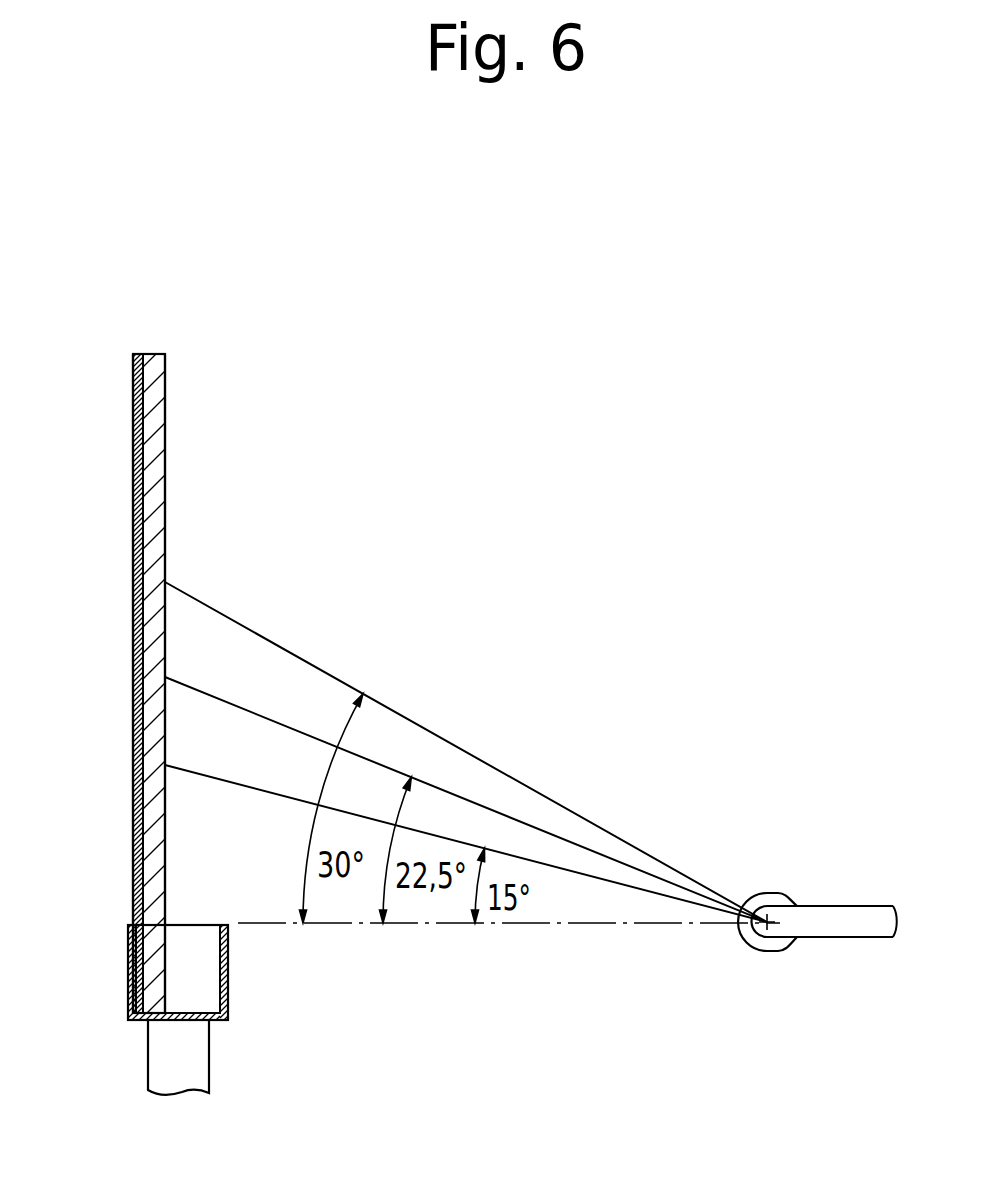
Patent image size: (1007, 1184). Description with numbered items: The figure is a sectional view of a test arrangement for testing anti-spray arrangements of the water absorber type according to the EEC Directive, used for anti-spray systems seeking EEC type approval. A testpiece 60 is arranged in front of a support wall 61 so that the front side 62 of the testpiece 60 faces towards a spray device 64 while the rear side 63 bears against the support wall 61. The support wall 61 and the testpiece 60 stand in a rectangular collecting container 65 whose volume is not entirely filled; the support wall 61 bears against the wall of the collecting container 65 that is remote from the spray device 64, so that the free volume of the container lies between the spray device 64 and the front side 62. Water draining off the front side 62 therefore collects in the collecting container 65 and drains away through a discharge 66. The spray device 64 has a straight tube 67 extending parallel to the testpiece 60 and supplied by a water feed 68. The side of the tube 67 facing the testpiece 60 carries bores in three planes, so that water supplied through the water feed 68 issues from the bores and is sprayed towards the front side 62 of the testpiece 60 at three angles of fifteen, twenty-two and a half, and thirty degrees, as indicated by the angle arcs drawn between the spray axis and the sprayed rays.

The testpiece 60 is at (150, 421).
The support wall 61 is at (137, 362).
The front side of the testpiece 62 is at (166, 508).
The rear side of the testpiece 63 is at (140, 527).
The spray device 64 is at (815, 898).
The collecting container 65 is at (229, 977).
The discharge 66 is at (195, 1073).
The straight tube 67 is at (748, 895).
The water feed 68 is at (835, 931).